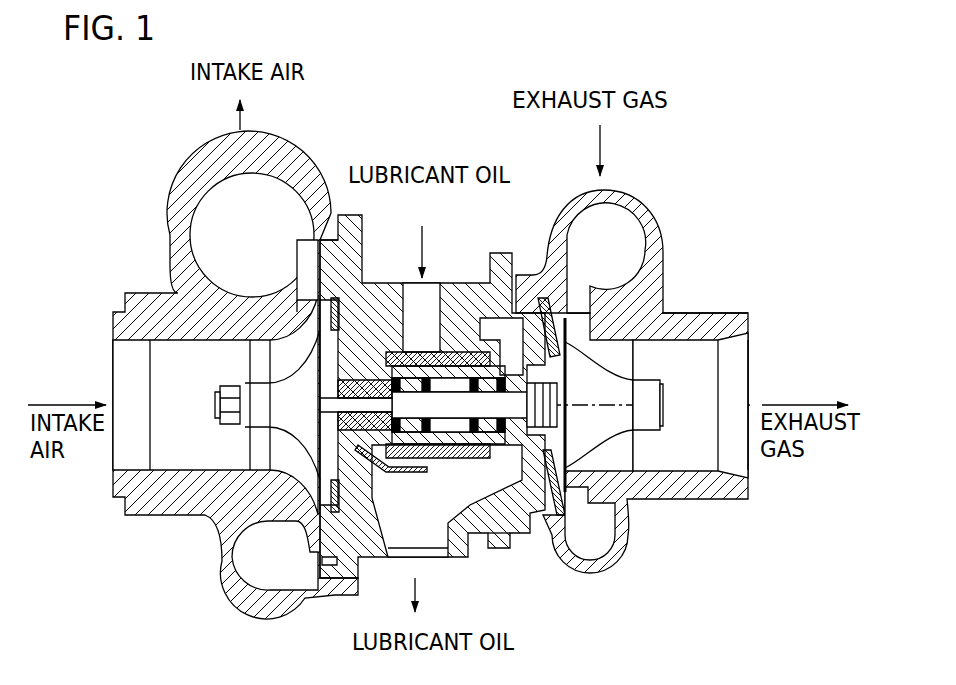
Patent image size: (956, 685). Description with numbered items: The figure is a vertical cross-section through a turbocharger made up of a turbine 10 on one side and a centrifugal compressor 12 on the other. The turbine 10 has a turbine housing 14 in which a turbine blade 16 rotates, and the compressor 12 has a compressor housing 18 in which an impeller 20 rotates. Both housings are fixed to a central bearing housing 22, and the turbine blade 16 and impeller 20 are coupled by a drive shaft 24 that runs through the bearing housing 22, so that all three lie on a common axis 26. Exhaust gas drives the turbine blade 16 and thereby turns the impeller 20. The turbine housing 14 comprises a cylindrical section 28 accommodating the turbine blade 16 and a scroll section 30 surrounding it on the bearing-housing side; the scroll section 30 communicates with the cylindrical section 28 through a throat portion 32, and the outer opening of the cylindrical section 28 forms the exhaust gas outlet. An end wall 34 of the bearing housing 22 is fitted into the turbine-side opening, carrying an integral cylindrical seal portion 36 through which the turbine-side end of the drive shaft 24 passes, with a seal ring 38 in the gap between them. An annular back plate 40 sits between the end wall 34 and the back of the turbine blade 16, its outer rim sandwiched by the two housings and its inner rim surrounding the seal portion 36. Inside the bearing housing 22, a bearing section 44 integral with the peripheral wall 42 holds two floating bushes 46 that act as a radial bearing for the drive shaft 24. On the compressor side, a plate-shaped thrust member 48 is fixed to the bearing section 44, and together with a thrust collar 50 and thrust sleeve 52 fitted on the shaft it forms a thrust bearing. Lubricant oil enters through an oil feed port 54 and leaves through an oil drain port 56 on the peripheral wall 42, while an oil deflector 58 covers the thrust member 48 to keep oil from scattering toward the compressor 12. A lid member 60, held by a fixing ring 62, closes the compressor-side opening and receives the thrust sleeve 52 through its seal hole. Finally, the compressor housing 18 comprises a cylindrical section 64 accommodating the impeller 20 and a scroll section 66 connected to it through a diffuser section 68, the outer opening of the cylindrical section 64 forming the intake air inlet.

The turbine 10 is at (731, 180).
The compressor 12 is at (121, 180).
The turbine housing 14 is at (657, 215).
The turbine blade 16 is at (665, 371).
The compressor housing 18 is at (190, 181).
The impeller 20 is at (249, 380).
The bearing housing 22 is at (498, 549).
The drive shaft 24 is at (446, 442).
The axis 26 is at (736, 386).
The cylindrical section 28 is at (683, 303).
The scroll section 30 is at (628, 197).
The throat portion 32 is at (580, 294).
The end wall 34 is at (521, 473).
The seal portion 36 is at (578, 446).
The seal ring 38 is at (554, 414).
The back plate 40 is at (580, 345).
The peripheral wall 42 is at (382, 282).
The bearing section 44 is at (414, 472).
The floating bushes 46 is at (416, 368).
The thrust member 48 is at (396, 334).
The thrust collar 50 is at (331, 412).
The thrust sleeve 52 is at (326, 388).
The oil feed port 54 is at (412, 286).
The oil drain port 56 is at (402, 553).
The oil deflector 58 is at (388, 492).
The lid member 60 is at (324, 351).
The fixing ring 62 is at (320, 476).
The cylindrical section 64 is at (150, 293).
The scroll section 66 is at (220, 162).
The diffuser section 68 is at (313, 277).